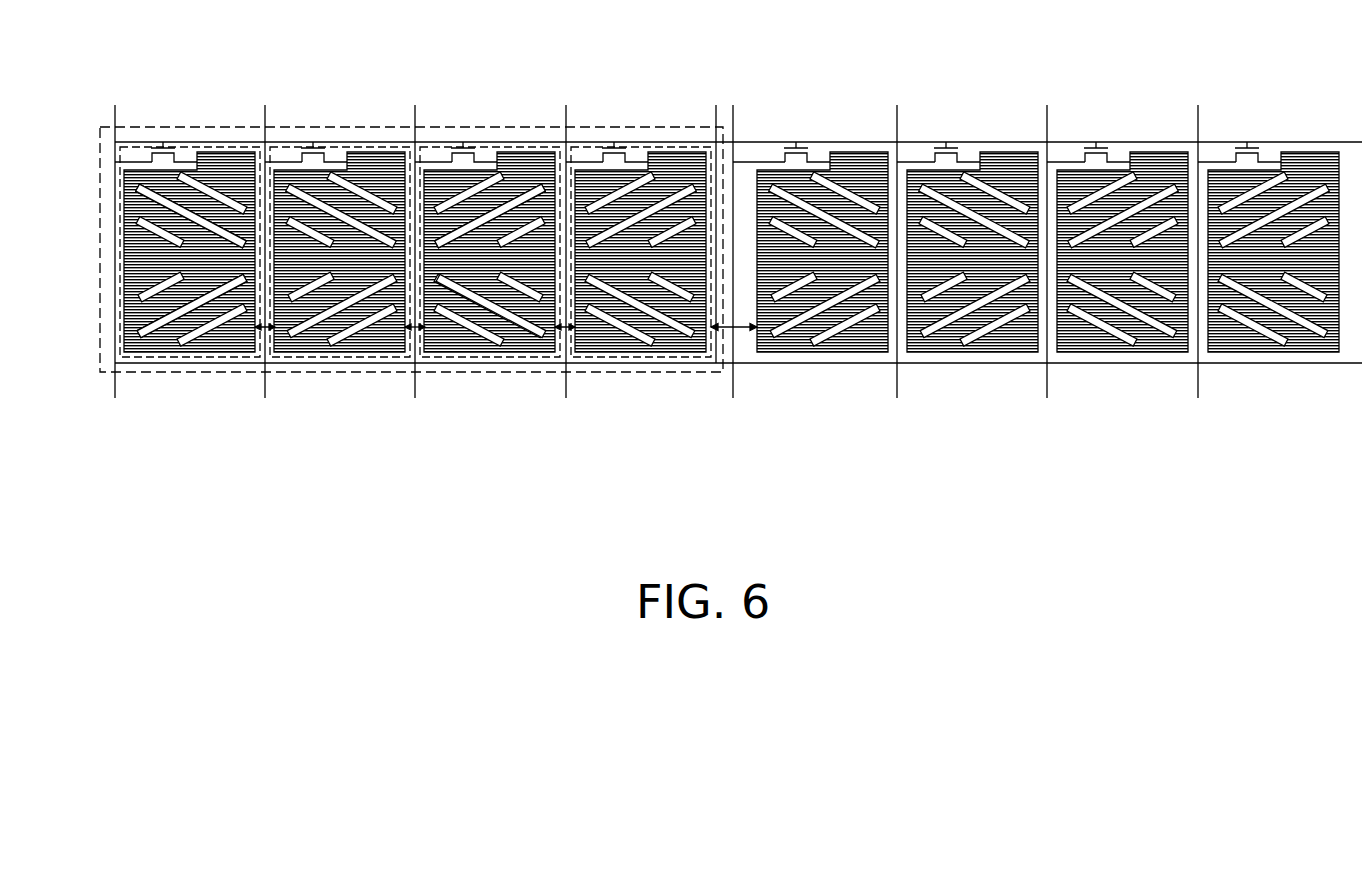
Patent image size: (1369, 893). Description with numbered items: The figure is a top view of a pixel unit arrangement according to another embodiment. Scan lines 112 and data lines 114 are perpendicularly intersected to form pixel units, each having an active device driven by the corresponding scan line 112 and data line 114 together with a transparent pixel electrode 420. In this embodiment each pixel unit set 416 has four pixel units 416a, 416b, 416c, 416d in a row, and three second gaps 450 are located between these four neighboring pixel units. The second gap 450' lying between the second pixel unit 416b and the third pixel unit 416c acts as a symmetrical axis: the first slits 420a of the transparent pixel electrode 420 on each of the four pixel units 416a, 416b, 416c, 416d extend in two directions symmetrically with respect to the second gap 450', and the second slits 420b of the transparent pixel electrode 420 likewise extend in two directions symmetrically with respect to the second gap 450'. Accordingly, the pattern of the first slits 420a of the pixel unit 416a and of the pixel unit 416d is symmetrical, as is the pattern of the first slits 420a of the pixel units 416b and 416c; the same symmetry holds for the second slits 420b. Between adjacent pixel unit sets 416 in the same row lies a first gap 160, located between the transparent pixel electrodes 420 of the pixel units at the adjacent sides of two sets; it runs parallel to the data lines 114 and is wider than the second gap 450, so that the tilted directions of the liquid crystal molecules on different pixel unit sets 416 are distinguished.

The scan line 112 is at (383, 142).
The data line 114 is at (113, 118).
The first gap 160 is at (745, 329).
The pixel unit set 416 is at (338, 372).
The pixel unit 416a is at (190, 147).
The pixel unit 416b is at (340, 147).
The pixel unit 416c is at (490, 147).
The pixel unit 416d is at (640, 147).
The transparent pixel electrode 420 is at (223, 167).
The first slit 420a is at (137, 188).
The second slit 420b is at (165, 335).
The second gap 450 is at (401, 386).
The second gap 450' is at (401, 386).